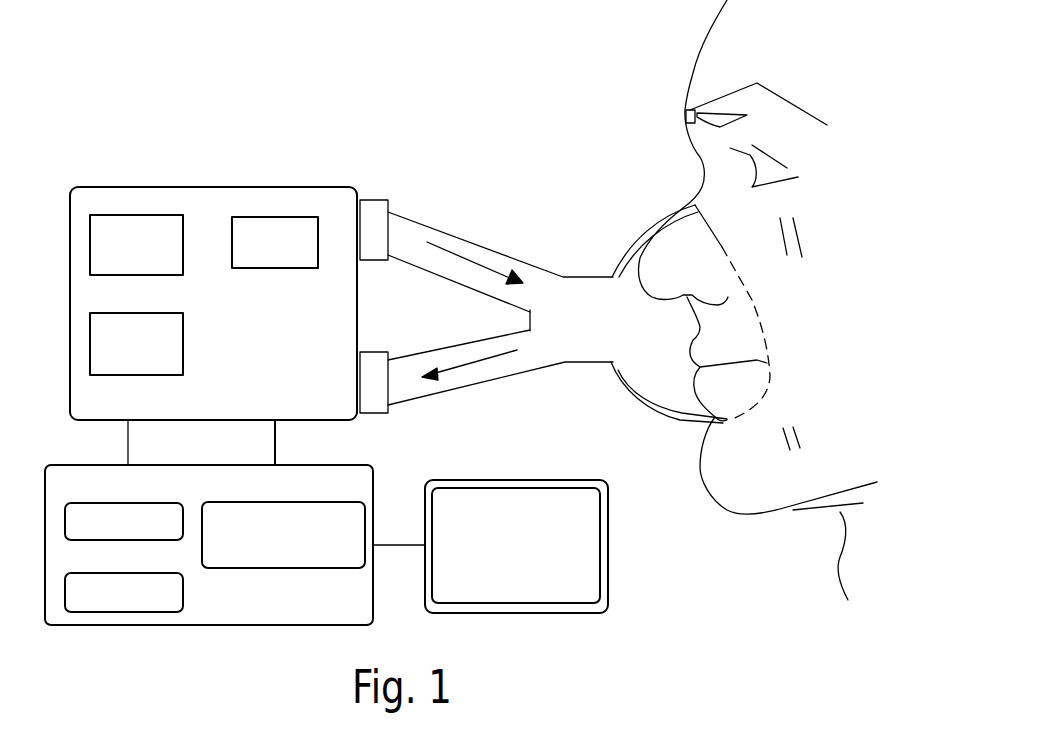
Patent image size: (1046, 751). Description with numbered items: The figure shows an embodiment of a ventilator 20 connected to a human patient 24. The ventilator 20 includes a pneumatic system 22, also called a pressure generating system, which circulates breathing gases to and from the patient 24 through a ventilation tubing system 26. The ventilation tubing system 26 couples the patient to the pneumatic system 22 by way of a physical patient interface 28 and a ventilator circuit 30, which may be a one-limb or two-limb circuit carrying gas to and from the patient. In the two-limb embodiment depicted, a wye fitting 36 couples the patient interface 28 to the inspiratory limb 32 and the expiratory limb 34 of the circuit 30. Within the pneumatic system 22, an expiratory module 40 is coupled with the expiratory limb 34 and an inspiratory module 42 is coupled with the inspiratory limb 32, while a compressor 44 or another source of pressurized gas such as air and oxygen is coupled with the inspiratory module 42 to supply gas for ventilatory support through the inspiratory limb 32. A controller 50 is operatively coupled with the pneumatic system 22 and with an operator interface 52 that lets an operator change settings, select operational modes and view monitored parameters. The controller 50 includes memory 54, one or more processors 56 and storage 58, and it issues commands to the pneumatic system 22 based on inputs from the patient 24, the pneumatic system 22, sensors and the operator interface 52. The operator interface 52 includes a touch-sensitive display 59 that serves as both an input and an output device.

The ventilator 20 is at (480, 85).
The pneumatic system 22 is at (205, 187).
The human patient 24 is at (693, 78).
The ventilation tubing system 26 is at (674, 279).
The patient interface 28 is at (640, 227).
The ventilator circuit 30 is at (512, 253).
The inspiratory limb 32 is at (445, 279).
The expiratory limb 34 is at (453, 387).
The wye fitting 36 is at (529, 317).
The expiratory module 40 is at (150, 375).
The inspiratory module 42 is at (152, 275).
The compressor 44 is at (280, 268).
The controller 50 is at (235, 568).
The operator interface 52 is at (637, 640).
The memory 54 is at (127, 541).
The processors 56 is at (312, 568).
The storage 58 is at (184, 593).
The display 59 is at (513, 614).